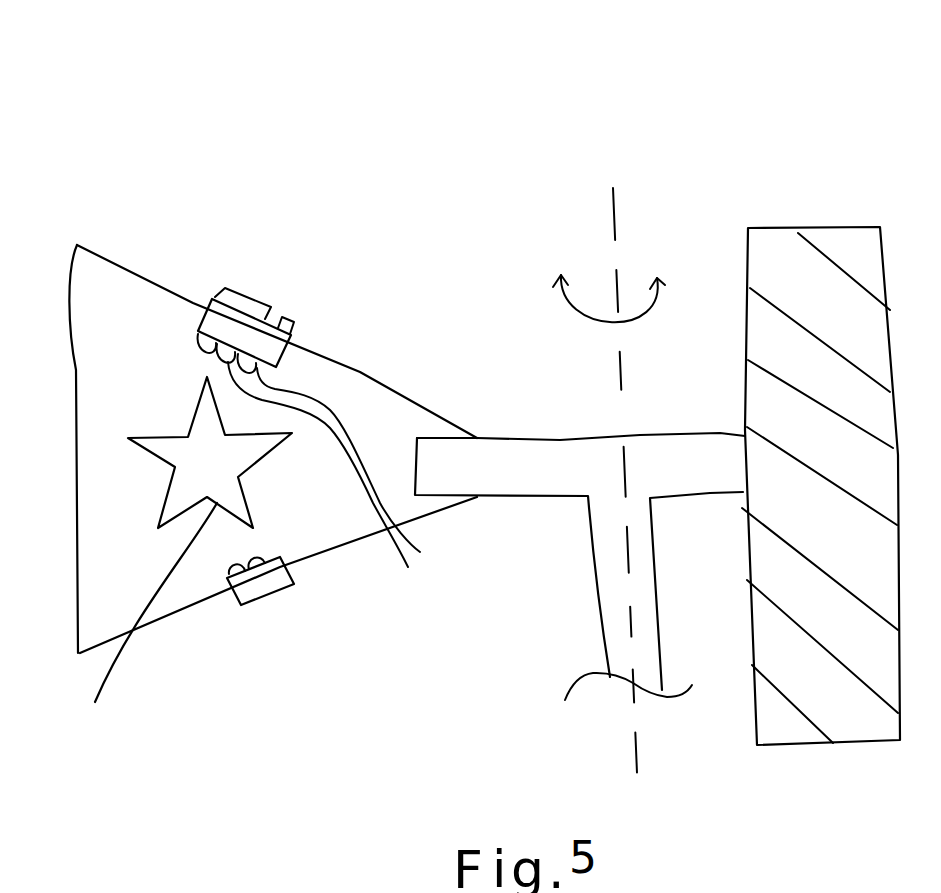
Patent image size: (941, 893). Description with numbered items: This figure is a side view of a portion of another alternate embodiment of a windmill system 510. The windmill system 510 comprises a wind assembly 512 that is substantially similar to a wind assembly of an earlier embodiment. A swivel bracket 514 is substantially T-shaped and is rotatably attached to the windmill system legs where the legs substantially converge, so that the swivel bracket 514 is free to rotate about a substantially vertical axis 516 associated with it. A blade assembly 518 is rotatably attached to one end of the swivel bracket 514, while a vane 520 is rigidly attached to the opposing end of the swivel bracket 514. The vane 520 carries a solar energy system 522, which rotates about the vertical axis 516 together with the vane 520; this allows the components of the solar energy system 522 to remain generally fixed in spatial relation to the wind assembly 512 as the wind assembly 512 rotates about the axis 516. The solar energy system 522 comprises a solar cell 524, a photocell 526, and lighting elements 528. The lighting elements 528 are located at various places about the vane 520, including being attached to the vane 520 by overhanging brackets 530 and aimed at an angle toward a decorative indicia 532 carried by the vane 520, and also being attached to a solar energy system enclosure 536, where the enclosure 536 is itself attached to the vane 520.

The windmill system 510 is at (805, 105).
The wind assembly 512 is at (688, 242).
The swivel bracket 514 is at (547, 427).
The vertical axis 516 is at (610, 205).
The blade assembly 518 is at (837, 220).
The vane 520 is at (378, 383).
The solar energy system 522 is at (208, 275).
The solar cell 524 is at (247, 298).
The photocell 526 is at (290, 320).
The lighting elements 528 is at (203, 345).
The overhanging brackets 530 is at (261, 590).
The decorative indicia 532 is at (150, 628).
The solar energy system enclosure 536 is at (265, 343).